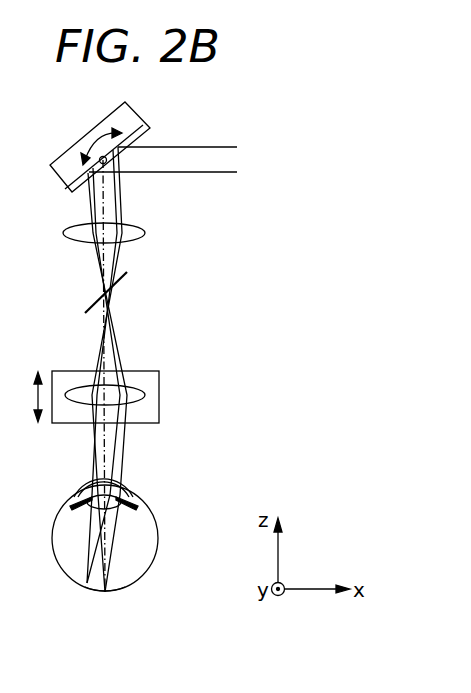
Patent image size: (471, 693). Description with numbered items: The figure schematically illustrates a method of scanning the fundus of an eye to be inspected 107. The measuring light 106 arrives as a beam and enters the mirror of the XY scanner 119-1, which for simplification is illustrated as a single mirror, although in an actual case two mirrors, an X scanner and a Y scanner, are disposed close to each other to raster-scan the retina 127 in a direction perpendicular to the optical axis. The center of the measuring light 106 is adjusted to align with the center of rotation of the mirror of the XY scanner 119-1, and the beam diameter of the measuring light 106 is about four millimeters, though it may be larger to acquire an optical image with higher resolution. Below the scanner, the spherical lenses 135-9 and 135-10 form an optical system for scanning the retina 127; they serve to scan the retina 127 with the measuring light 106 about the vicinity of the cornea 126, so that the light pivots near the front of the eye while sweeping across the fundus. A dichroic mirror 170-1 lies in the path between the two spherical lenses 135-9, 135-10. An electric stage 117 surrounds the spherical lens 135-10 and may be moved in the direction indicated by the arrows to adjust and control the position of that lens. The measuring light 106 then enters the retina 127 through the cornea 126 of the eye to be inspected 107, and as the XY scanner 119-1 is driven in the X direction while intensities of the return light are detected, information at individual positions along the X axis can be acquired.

The XY scanner 119-1 is at (63, 155).
The measuring light 106 is at (176, 146).
The spherical lens 135-9 is at (146, 232).
The dichroic mirror 170-1 is at (125, 277).
The electric stage 117 is at (160, 375).
The spherical lens 135-10 is at (145, 397).
The cornea 126 is at (125, 488).
The eye to be inspected 107 is at (160, 530).
The retina 127 is at (113, 593).